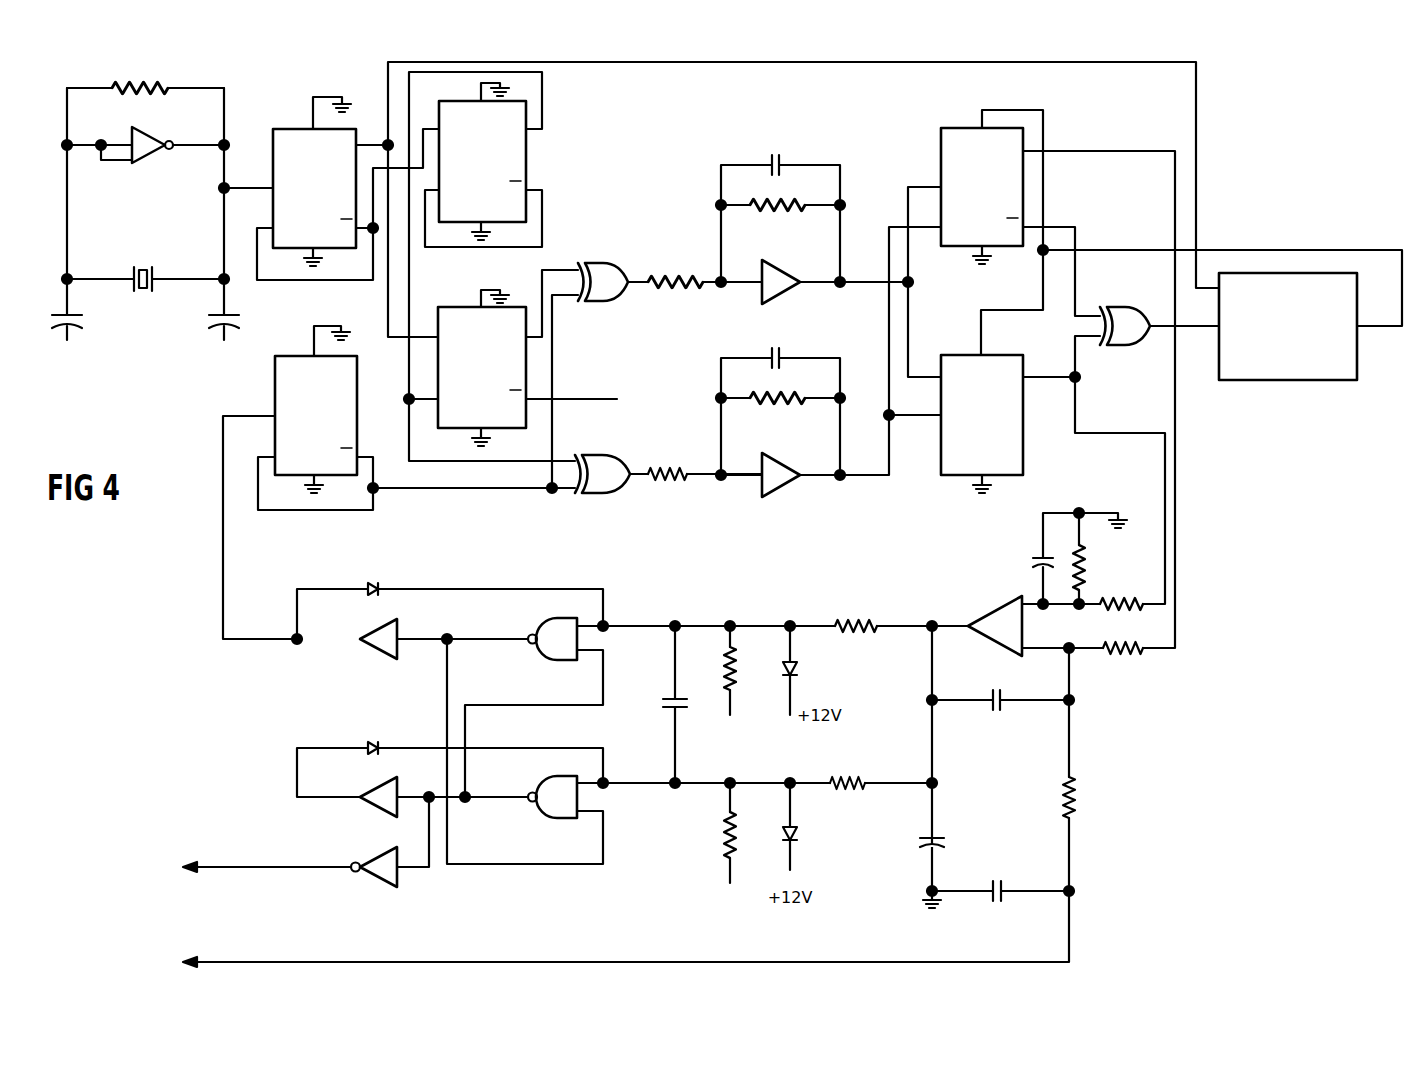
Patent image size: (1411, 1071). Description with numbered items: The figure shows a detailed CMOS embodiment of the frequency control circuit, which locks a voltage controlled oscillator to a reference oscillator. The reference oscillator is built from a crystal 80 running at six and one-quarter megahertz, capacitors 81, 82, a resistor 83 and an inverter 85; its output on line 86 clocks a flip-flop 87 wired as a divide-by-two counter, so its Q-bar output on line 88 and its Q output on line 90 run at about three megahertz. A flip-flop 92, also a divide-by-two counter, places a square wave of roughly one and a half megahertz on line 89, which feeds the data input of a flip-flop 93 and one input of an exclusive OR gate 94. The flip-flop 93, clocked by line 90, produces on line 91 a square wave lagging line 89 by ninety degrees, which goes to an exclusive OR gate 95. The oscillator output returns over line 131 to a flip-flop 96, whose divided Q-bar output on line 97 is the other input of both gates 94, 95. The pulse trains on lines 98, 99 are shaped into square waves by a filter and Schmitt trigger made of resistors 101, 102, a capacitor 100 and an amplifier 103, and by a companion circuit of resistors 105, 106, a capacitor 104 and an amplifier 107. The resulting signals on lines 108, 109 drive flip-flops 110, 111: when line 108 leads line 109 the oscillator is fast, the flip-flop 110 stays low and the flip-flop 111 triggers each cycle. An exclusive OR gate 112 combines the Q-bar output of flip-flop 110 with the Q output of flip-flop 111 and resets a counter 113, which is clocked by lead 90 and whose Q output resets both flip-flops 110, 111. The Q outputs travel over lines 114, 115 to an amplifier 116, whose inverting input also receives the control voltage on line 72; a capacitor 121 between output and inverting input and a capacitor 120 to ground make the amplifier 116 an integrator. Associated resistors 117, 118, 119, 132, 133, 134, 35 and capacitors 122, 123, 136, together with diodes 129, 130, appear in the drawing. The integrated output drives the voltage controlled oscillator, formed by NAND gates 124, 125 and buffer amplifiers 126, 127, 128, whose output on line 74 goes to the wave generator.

The resistor 35 is at (722, 838).
The line 72 is at (246, 961).
The line 74 is at (245, 866).
The crystal 80 is at (143, 267).
The capacitor 81 is at (82, 322).
The capacitor 82 is at (209, 322).
The resistor 83 is at (144, 88).
The inverter 85 is at (150, 156).
The line 86 is at (245, 188).
The flip-flop 87 is at (276, 129).
The line 88 is at (373, 266).
The line 89 is at (542, 103).
The line 90 is at (387, 83).
The line 91 is at (560, 269).
The flip-flop 92 is at (526, 156).
The flip-flop 93 is at (452, 307).
The exclusive OR gate 94 is at (624, 461).
The exclusive OR gate 95 is at (617, 270).
The flip-flop 96 is at (275, 383).
The line 97 is at (448, 489).
The line 98 is at (634, 285).
The line 99 is at (637, 478).
The capacitor 100 is at (782, 160).
The resistor 101 is at (675, 281).
The resistor 102 is at (778, 200).
The amplifier 103 is at (775, 270).
The capacitor 104 is at (782, 353).
The resistor 105 is at (663, 473).
The resistor 106 is at (775, 394).
The amplifier 107 is at (791, 464).
The line 108 is at (861, 284).
The line 109 is at (868, 478).
The flip-flop 110 is at (953, 128).
The flip-flop 111 is at (1023, 466).
The exclusive OR gate 112 is at (1125, 311).
The counter 113 is at (1287, 380).
The line 114 is at (1097, 150).
The line 115 is at (1075, 408).
The amplifier 116 is at (976, 615).
The resistor 117 is at (1125, 655).
The resistor 118 is at (1085, 565).
The resistor 119 is at (1078, 798).
The capacitor 120 is at (1033, 558).
The capacitor 121 is at (997, 710).
The capacitor 122 is at (998, 880).
The capacitor 123 is at (944, 840).
The NAND gate 124 is at (545, 779).
The NAND gate 125 is at (545, 621).
The buffer amplifier 126 is at (366, 649).
The buffer amplifier 127 is at (365, 788).
The buffer amplifier 128 is at (369, 853).
The diode 129 is at (373, 583).
The diode 130 is at (372, 742).
The line 131 is at (232, 641).
The resistor 132 is at (851, 625).
The resistor 133 is at (840, 780).
The resistor 134 is at (722, 668).
The capacitor 136 is at (663, 700).